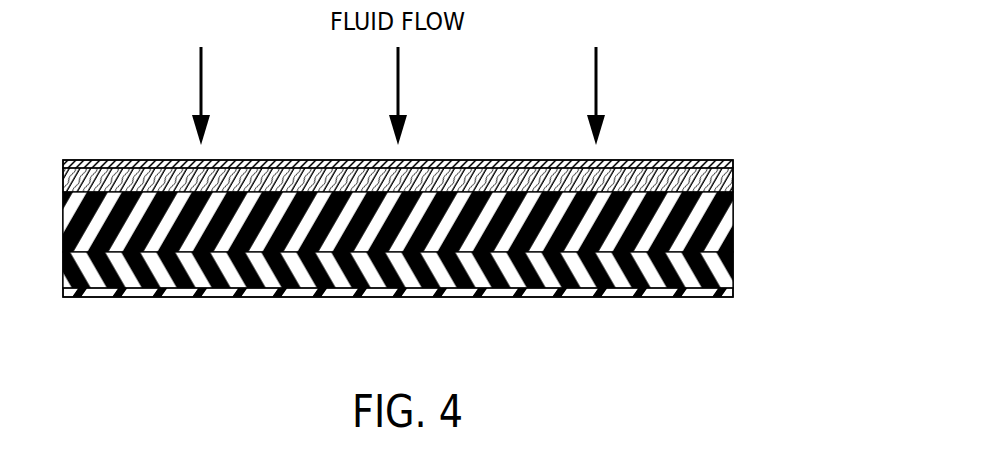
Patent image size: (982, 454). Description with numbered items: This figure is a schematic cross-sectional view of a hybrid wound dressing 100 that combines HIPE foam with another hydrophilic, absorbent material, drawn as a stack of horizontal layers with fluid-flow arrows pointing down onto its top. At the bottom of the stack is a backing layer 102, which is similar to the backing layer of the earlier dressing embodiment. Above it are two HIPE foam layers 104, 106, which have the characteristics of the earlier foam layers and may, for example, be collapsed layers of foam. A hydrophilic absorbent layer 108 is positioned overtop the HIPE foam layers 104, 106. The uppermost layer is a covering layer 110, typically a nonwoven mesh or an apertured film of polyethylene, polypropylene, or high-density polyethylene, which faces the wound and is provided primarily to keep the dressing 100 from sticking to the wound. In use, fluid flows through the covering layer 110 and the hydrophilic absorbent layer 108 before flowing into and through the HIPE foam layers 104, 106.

The hybrid dressing 100 is at (682, 128).
The backing layer 102 is at (700, 293).
The HIPE foam layer 104 is at (728, 257).
The HIPE foam layer 106 is at (725, 204).
The hydrophilic absorbent layer 108 is at (733, 173).
The covering layer 110 is at (733, 163).